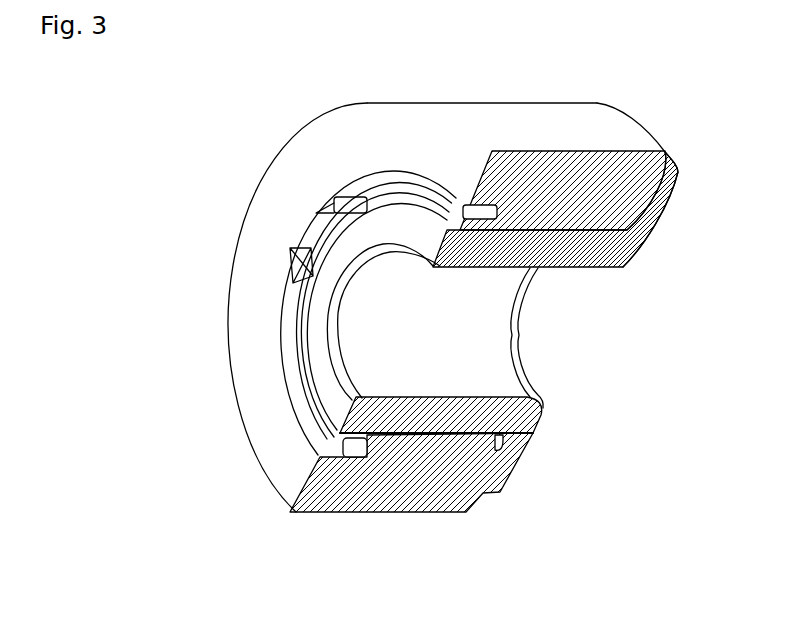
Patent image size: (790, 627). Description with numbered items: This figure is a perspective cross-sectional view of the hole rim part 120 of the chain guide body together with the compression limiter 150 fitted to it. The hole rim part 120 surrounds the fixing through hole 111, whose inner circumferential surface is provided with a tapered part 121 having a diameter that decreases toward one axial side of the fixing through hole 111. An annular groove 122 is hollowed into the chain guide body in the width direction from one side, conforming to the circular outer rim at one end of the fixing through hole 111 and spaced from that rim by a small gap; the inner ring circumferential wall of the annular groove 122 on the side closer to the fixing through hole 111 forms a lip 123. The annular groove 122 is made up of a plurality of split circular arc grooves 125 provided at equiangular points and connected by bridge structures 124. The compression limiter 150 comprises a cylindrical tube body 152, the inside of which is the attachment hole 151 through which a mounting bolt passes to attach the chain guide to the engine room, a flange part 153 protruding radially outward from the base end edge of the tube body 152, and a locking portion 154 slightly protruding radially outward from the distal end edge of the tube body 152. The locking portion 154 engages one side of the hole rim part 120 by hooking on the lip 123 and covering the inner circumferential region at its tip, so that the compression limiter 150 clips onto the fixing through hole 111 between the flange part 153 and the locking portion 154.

The fixing through hole 111 is at (457, 415).
The hole rim part 120 is at (279, 125).
The tapered part 121 is at (600, 251).
The annular groove 122 is at (367, 187).
The lip 123 is at (465, 205).
The bridge structure 124 is at (293, 247).
The circular arc groove 125 is at (417, 166).
The compression limiter 150 is at (550, 357).
The attachment hole 151 is at (520, 320).
The tube body 152 is at (405, 423).
The flange part 153 is at (522, 463).
The locking portion 154 is at (343, 440).